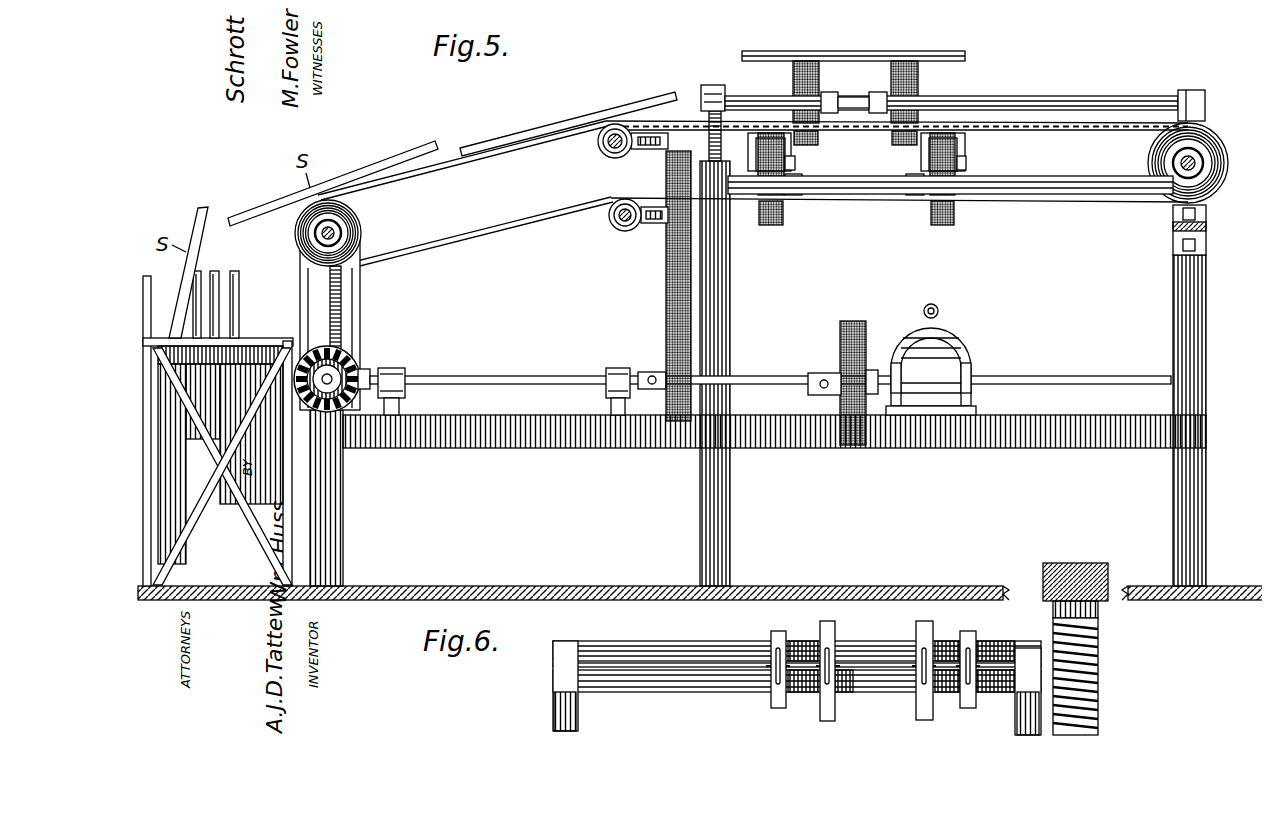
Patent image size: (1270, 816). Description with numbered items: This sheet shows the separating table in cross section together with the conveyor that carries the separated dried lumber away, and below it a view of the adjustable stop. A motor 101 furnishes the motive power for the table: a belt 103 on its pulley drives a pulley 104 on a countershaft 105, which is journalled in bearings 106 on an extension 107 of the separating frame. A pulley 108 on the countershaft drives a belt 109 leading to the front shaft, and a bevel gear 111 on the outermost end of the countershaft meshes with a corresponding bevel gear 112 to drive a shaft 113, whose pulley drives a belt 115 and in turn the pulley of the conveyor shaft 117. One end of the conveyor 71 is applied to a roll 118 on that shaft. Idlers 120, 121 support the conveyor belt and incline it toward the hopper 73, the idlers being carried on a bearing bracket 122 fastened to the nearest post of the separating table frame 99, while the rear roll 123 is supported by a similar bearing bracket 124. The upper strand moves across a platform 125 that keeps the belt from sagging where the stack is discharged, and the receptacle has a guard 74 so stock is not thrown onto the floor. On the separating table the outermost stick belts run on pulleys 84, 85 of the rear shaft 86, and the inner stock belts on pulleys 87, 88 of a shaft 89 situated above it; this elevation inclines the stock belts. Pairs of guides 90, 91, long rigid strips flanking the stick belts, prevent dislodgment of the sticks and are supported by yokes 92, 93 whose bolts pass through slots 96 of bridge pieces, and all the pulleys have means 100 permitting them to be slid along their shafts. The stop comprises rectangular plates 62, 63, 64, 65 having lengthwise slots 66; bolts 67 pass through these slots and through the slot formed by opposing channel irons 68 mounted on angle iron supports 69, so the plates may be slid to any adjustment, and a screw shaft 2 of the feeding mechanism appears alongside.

In FIG. 6, the screw shaft 2 is at (1090, 659).
In FIG. 6, the rectangular plate 62 is at (770, 700).
In FIG. 6, the rectangular plate 63 is at (822, 695).
In FIG. 6, the rectangular plate 64 is at (918, 703).
In FIG. 6, the rectangular plate 65 is at (964, 697).
In FIG. 6, the slot 66 is at (764, 648).
In FIG. 6, the bolt 67 is at (764, 663).
In FIG. 6, the channel iron 68 is at (668, 644).
In FIG. 6, the angle iron support 69 is at (545, 695).
In FIG. 5, the conveyor 71 is at (432, 152).
In FIG. 5, the hopper 73 is at (235, 394).
In FIG. 5, the guard 74 is at (140, 295).
In FIG. 5, the pulley 84 is at (752, 205).
In FIG. 5, the pulley 85 is at (946, 201).
In FIG. 5, the rear shaft 86 is at (828, 186).
In FIG. 5, the pulley 87 is at (815, 62).
In FIG. 5, the pulley 88 is at (910, 78).
In FIG. 5, the shaft 89 is at (742, 92).
In FIG. 5, the guide 90 is at (757, 151).
In FIG. 5, the guide 91 is at (950, 128).
In FIG. 5, the yoke 92 is at (786, 160).
In FIG. 5, the yoke 93 is at (958, 152).
In FIG. 5, the slot 96 is at (1036, 169).
In FIG. 5, the separating table frame 99 is at (716, 498).
In FIG. 5, the pulley adjusting means 100 is at (828, 90).
In FIG. 5, the motor 101 is at (945, 319).
In FIG. 5, the belt 103 is at (846, 313).
In FIG. 5, the pulley 104 is at (832, 321).
In FIG. 5, the countershaft 105 is at (490, 369).
In FIG. 5, the bearing 106 is at (396, 367).
In FIG. 5, the extension 107 is at (330, 490).
In FIG. 5, the pulley 108 is at (658, 350).
In FIG. 5, the belt 109 is at (658, 262).
In FIG. 5, the bevel gear 111 is at (337, 349).
In FIG. 5, the bevel gear 112 is at (330, 340).
In FIG. 5, the shaft 113 is at (352, 359).
In FIG. 5, the belt 115 is at (352, 268).
In FIG. 5, the conveyor shaft 117 is at (326, 225).
In FIG. 5, the roll 118 is at (347, 210).
In FIG. 5, the idler 120 is at (602, 147).
In FIG. 5, the idler 121 is at (604, 213).
In FIG. 5, the bearing bracket 122 is at (645, 216).
In FIG. 5, the rear roll 123 is at (1200, 175).
In FIG. 5, the bearing bracket 124 is at (1198, 219).
In FIG. 5, the platform 125 is at (1080, 122).